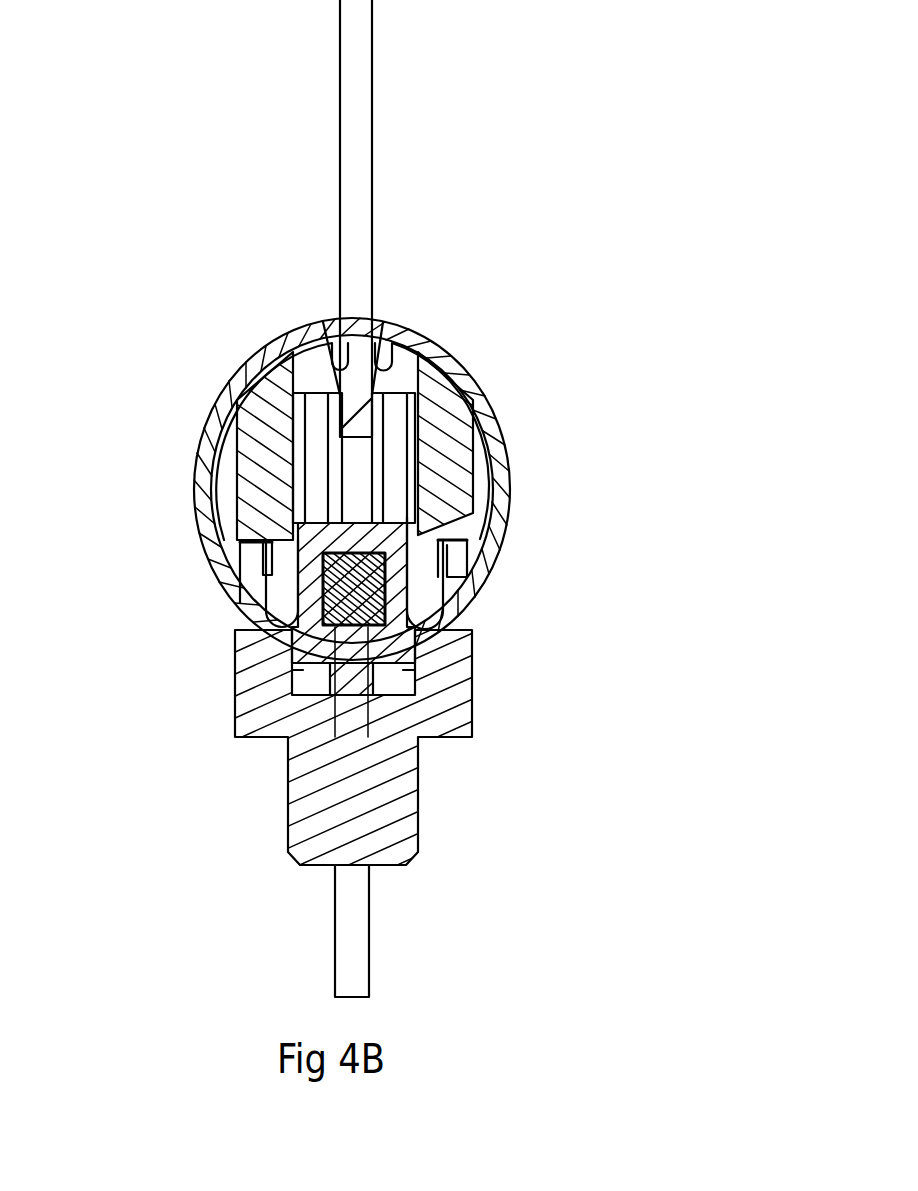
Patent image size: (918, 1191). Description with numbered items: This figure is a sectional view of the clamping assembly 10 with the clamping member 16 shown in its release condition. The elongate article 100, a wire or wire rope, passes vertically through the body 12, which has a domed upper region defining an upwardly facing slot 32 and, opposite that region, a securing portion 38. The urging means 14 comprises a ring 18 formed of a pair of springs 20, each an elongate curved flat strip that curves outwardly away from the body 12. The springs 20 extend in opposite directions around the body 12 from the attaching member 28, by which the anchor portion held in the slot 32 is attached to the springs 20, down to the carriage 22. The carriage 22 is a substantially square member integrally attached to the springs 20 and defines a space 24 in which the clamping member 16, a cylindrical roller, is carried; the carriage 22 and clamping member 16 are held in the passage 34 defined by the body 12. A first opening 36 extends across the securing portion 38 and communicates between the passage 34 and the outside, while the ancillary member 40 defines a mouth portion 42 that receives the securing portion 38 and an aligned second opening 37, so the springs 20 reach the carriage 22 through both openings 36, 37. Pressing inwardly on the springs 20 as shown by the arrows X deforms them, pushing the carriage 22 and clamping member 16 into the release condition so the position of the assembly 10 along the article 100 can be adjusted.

The elongate article 100 is at (358, 95).
The clamping assembly 10 is at (242, 337).
The body 12 is at (449, 391).
The urging means 14 is at (524, 472).
The clamping member 16 is at (300, 594).
The ring 18 is at (188, 428).
The springs 20 is at (498, 433).
The carriage 22 is at (417, 577).
The space 24 is at (371, 613).
The attaching member 28 is at (365, 368).
The upwardly facing slot 32 is at (338, 365).
The passage 34 is at (317, 438).
The first opening 36 is at (298, 542).
The second opening 37 is at (455, 580).
The securing portion 38 is at (427, 598).
The ancillary member 40 is at (272, 807).
The mouth portion 42 is at (272, 618).
The arrows X is at (183, 504).